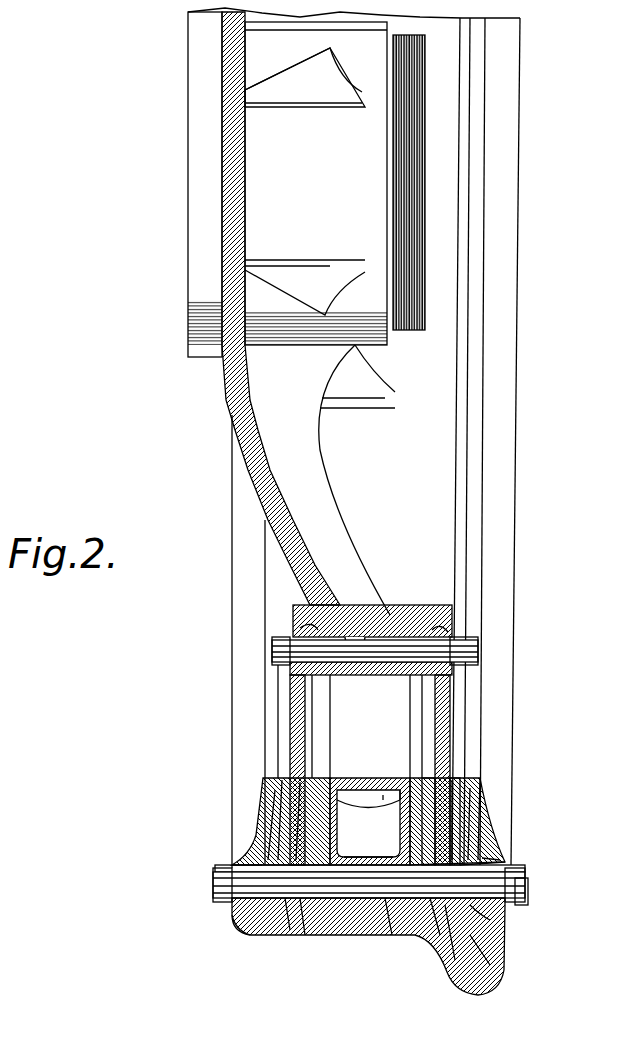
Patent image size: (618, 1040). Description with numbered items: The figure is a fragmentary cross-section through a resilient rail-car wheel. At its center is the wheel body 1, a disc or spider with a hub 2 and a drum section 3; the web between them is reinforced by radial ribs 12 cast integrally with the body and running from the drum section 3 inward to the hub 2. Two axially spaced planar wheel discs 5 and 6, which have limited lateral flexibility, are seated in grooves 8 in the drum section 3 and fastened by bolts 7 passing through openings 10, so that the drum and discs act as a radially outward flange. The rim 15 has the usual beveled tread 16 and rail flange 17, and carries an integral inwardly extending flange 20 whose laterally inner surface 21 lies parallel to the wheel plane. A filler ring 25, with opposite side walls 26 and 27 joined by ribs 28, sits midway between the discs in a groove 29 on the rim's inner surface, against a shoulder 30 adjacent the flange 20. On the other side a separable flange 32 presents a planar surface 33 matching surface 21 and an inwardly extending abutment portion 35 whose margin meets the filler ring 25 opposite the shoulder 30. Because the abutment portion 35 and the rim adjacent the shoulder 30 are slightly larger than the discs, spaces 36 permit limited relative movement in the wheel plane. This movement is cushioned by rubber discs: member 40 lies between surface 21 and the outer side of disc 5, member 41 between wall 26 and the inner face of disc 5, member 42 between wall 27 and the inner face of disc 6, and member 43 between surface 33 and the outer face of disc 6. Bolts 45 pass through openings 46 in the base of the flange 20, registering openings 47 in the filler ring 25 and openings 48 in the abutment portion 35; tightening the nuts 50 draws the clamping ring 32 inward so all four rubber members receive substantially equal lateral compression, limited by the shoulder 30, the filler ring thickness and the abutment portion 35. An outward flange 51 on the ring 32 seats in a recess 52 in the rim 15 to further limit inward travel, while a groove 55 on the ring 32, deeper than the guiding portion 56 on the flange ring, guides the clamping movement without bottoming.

The central wheel body 1 is at (220, 368).
The hub 2 is at (197, 210).
The drum section 3 is at (392, 622).
The wheel disc 5 is at (290, 697).
The wheel disc 6 is at (452, 695).
The bolts 7 is at (478, 648).
The grooves 8 is at (326, 624).
The openings 10 is at (365, 628).
The radial ribs 12 is at (316, 95).
The rim 15 is at (216, 923).
The beveled tread 16 is at (347, 930).
The rail flange 17 is at (490, 985).
The flange 20 is at (262, 808).
The laterally inner surface 21 is at (275, 792).
The filler ring 25 is at (345, 925).
The side wall 26 is at (340, 795).
The side wall 27 is at (400, 795).
The ribs 28 is at (383, 797).
The groove 29 is at (302, 935).
The shoulder 30 is at (292, 930).
The separable flange 32 is at (492, 800).
The planar surface 33 is at (478, 810).
The abutment portion 35 is at (390, 945).
The spaces 36 is at (265, 866).
The rubber disc 40 is at (280, 780).
The rubber disc 41 is at (300, 780).
The rubber member 42 is at (452, 780).
The rubber disc 43 is at (470, 787).
The bolts 45 is at (532, 900).
The openings 46 is at (240, 930).
The openings 47 is at (385, 870).
The openings 48 is at (482, 858).
The nuts 50 is at (505, 905).
The radially outwardly disposed flange 51 is at (470, 920).
The groove 52 is at (482, 960).
The groove 55 is at (452, 950).
The guiding portion 56 is at (440, 938).